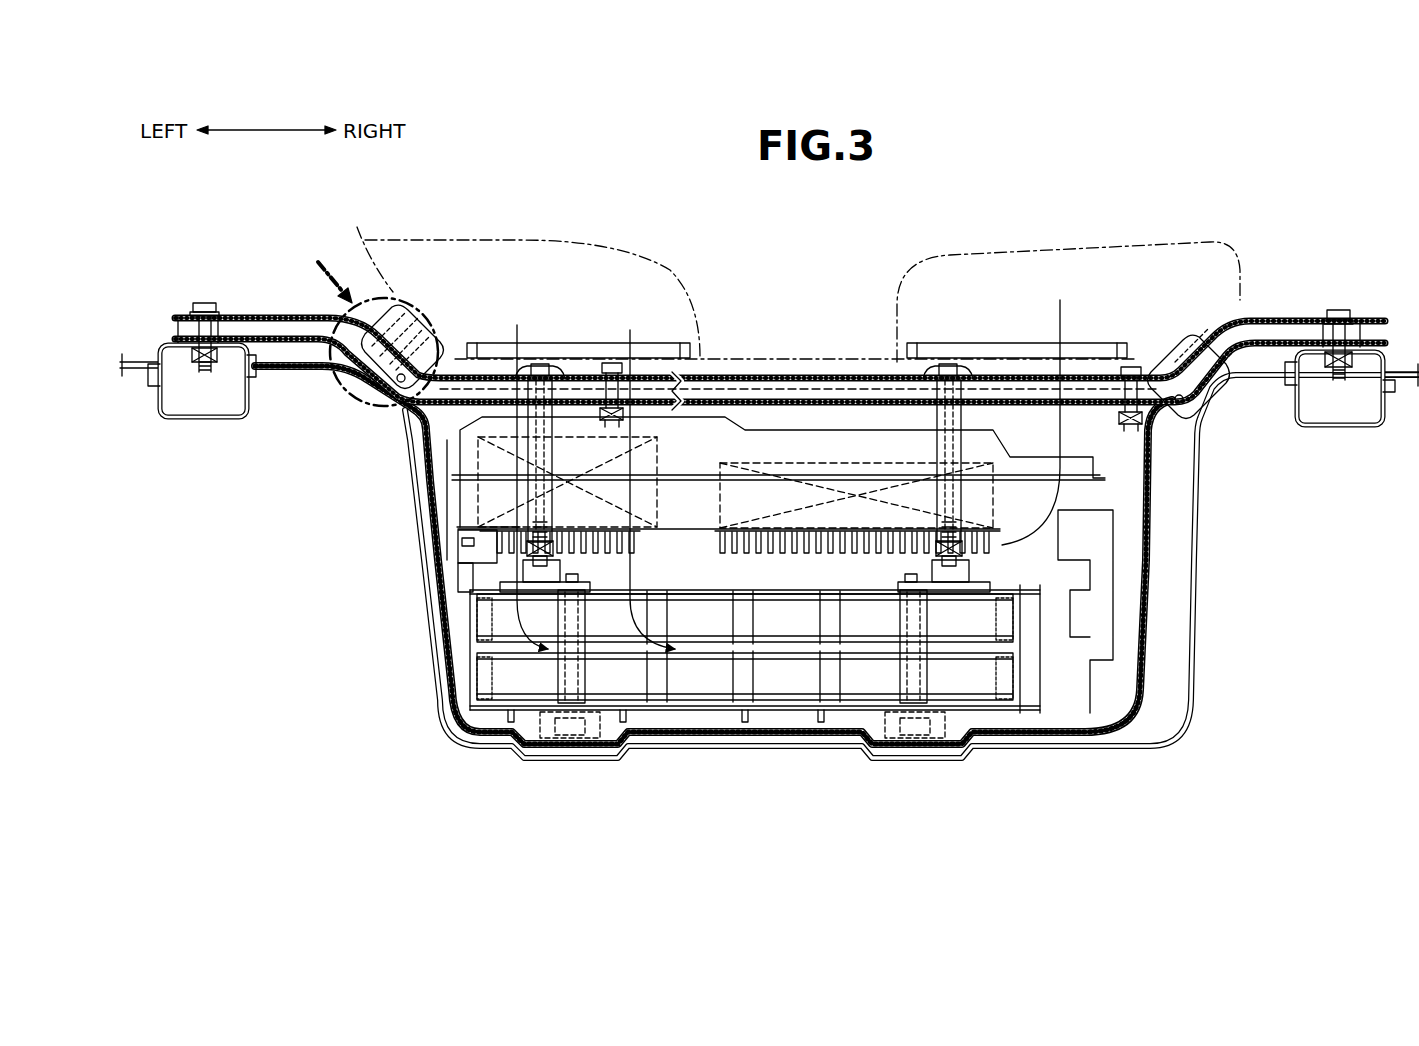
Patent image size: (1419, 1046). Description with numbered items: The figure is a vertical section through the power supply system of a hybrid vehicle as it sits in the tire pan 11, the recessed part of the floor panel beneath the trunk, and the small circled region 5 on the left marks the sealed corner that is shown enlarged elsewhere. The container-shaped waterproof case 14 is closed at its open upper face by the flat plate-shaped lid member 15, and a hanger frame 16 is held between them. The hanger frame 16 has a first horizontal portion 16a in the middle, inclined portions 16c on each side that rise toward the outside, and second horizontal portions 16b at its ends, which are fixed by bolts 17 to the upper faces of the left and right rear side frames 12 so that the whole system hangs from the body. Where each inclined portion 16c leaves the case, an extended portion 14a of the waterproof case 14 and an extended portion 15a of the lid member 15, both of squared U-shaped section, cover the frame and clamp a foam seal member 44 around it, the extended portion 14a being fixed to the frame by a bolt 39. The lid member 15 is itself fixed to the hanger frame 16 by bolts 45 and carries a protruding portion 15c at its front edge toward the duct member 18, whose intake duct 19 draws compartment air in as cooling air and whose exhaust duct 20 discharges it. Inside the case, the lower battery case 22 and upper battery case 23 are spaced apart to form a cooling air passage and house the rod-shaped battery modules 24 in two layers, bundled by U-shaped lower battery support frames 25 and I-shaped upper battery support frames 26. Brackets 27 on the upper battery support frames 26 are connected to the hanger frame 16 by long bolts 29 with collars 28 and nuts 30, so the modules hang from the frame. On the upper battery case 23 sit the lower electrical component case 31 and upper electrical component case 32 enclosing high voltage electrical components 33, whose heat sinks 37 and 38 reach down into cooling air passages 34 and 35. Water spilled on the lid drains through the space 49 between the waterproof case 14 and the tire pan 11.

The detail view indicator 5 is at (366, 319).
The tire pan 11 is at (790, 757).
The rear side frame 12 is at (193, 418).
The waterproof case 14 is at (740, 742).
The extended portion 14a is at (368, 402).
The lid member 15 is at (798, 372).
The extended portion 15a is at (630, 356).
The protruding portion 15c is at (742, 374).
The hanger frame 16 is at (843, 410).
The first horizontal portion 16a is at (857, 390).
The second horizontal portion 16b is at (273, 316).
The inclined portion 16c is at (517, 356).
The bolt 17 is at (205, 304).
The duct member 18 is at (667, 342).
The intake duct 19 is at (510, 240).
The exhaust duct 20 is at (1100, 240).
The lower battery case 22 is at (697, 712).
The upper battery case 23 is at (694, 529).
The battery module 24 is at (768, 630).
The lower battery support frame 25 is at (585, 670).
The upper battery support frame 26 is at (532, 588).
The bracket 27 is at (565, 574).
The collar 28 is at (552, 468).
The long bolt 29 is at (537, 364).
The nut 30 is at (527, 547).
The lower electrical component case 31 is at (458, 498).
The upper electrical component case 32 is at (463, 452).
The high voltage electrical component 33 is at (723, 468).
The cooling air passage 34 is at (468, 548).
The cooling air passage 35 is at (813, 551).
The heat sink 37 is at (613, 553).
The heat sink 38 is at (747, 567).
The bolt 39 is at (400, 387).
The seal member 44 is at (392, 330).
The bolt 45 is at (610, 363).
The space 49 is at (437, 580).